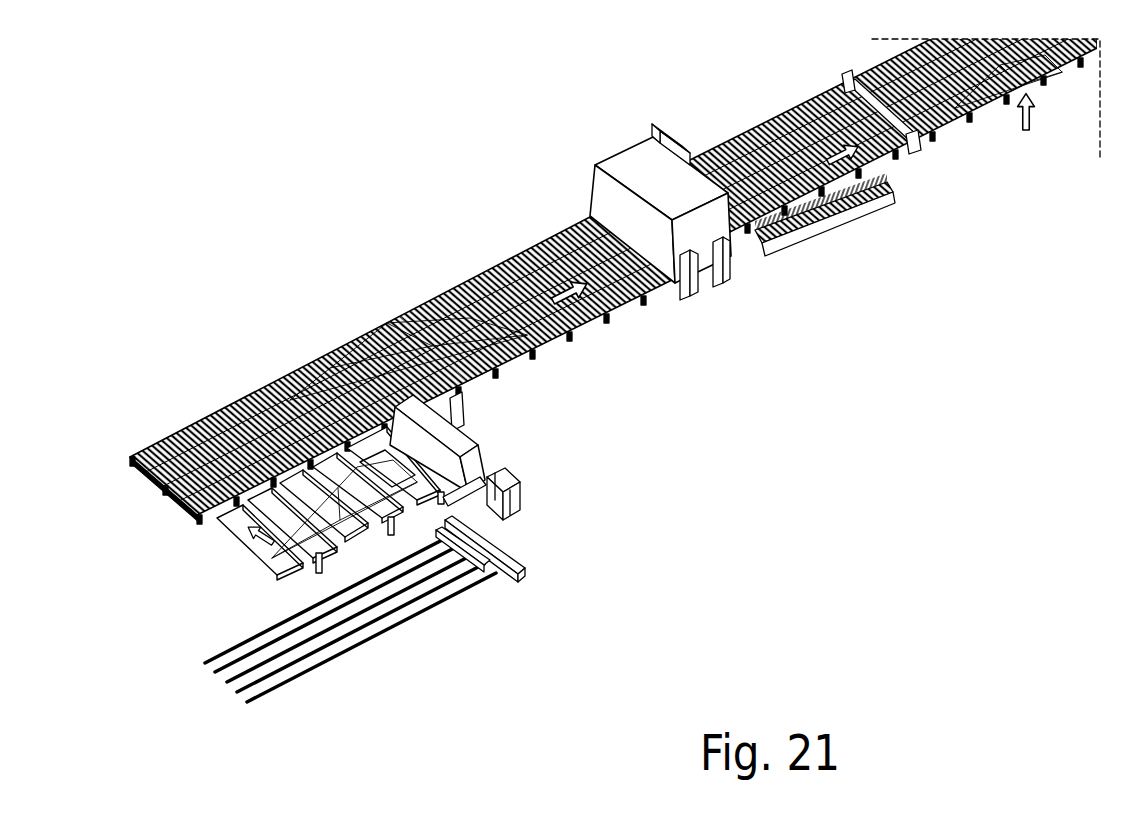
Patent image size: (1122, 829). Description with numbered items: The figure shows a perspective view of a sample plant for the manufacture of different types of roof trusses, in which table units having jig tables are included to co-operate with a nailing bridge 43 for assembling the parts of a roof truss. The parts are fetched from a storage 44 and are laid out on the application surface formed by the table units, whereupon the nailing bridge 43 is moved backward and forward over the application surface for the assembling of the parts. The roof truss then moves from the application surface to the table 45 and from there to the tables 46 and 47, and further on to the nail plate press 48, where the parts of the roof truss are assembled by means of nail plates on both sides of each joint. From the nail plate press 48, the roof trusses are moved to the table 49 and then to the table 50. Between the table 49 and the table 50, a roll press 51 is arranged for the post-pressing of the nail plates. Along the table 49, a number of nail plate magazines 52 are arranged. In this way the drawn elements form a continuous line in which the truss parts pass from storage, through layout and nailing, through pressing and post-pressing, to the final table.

The nailing bridge 43 is at (462, 452).
The storage 44 is at (360, 620).
The table 45 is at (197, 418).
The table 46 is at (387, 323).
The table 47 is at (533, 242).
The nail plate press 48 is at (685, 200).
The table 49 is at (770, 123).
The table 50 is at (987, 107).
The roll press 51 is at (920, 137).
The nail plate magazines 52 is at (838, 217).